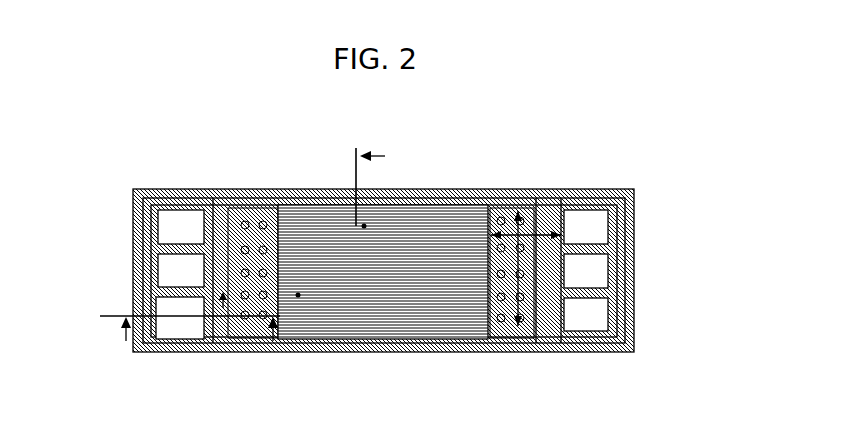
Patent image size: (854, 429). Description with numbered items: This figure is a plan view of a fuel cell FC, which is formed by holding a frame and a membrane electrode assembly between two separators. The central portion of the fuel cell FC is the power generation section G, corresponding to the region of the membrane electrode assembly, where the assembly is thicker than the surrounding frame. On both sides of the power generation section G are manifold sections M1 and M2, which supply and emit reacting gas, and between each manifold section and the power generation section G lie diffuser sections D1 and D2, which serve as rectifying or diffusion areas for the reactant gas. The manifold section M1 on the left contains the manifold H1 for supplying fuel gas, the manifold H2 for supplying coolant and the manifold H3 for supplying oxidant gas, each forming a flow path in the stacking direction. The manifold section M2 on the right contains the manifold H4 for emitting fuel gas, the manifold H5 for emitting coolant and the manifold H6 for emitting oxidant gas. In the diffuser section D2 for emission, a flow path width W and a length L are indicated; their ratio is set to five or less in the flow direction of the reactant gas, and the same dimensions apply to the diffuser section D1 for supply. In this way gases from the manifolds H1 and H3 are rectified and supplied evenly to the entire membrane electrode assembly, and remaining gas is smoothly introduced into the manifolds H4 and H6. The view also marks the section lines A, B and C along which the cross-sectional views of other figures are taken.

The fuel cell FC is at (601, 175).
The manifold for supplying fuel gas H1 is at (158, 207).
The manifold for supplying coolant H2 is at (158, 265).
The manifold for supplying oxidant gas H3 is at (113, 322).
The manifold for emitting fuel gas H4 is at (588, 215).
The manifold for emitting coolant H5 is at (590, 265).
The manifold for emitting oxidant gas H6 is at (590, 310).
The manifold section M1 is at (197, 361).
The manifold section M2 is at (599, 361).
The diffuser section D1 is at (273, 361).
The diffuser section D2 is at (541, 361).
The power generation section G is at (480, 361).
The length L is at (505, 200).
The flow path width W is at (524, 205).
The line A- A is at (190, 337).
The line B- B is at (358, 218).
The line C- C is at (215, 298).